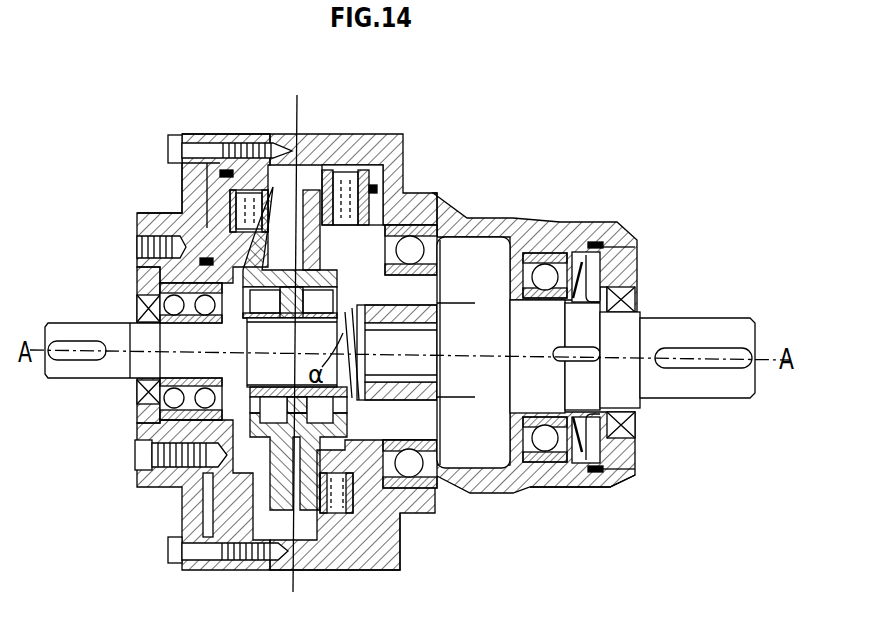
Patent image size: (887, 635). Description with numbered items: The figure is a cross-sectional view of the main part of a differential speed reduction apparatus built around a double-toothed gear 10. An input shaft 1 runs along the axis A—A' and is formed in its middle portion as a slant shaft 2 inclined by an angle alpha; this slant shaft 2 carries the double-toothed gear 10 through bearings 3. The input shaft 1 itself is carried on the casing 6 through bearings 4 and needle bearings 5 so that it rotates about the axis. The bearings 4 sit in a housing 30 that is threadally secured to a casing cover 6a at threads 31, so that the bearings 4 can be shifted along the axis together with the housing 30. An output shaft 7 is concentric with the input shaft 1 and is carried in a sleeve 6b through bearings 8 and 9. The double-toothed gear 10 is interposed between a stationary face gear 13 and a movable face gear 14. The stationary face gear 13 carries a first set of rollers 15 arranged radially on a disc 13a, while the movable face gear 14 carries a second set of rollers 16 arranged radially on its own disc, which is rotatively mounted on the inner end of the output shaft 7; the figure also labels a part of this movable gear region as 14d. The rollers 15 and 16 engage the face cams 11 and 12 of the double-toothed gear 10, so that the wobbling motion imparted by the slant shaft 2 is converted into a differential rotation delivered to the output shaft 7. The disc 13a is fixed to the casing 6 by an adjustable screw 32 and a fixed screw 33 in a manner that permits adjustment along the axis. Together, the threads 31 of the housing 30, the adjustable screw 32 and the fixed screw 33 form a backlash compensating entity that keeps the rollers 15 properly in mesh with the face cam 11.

The input shaft 1 is at (77, 366).
The slant shaft 2 is at (330, 332).
The bearings 3 is at (315, 300).
The bearings 4 is at (138, 404).
The needle bearings 5 is at (430, 425).
The casing 6 is at (327, 568).
The casing cover 6a is at (183, 505).
The sleeve 6b is at (543, 489).
The output shaft 7 is at (714, 392).
The bearings 8 is at (413, 465).
The bearings 9 is at (563, 478).
The double-toothed gear 10 is at (303, 230).
The face cam 11 is at (248, 138).
The face cam 12 is at (310, 193).
The stationary face gear 13 is at (203, 203).
The disc 13a is at (213, 207).
The movable face gear 14 is at (393, 212).
The roller bearing 14d is at (358, 172).
The rollers 15 is at (200, 200).
The rollers 16 is at (387, 217).
The housing 30 is at (147, 293).
The threads 31 is at (140, 258).
The adjustable screw 32 is at (157, 224).
The fixed screw 33 is at (137, 458).